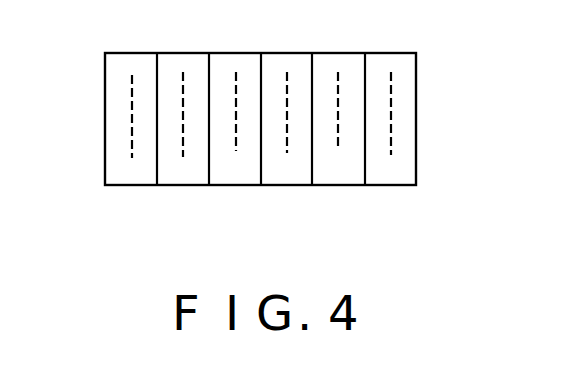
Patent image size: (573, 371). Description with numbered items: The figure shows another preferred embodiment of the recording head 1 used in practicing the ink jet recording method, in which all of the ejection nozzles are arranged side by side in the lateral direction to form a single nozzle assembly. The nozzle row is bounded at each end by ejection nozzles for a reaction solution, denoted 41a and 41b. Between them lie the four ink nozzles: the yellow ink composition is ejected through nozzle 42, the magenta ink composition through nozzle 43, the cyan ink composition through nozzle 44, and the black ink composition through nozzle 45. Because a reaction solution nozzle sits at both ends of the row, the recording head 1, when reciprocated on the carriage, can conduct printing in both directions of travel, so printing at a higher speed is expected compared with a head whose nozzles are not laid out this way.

The recording head 1 is at (416, 133).
The ejection nozzle for reaction solution 41a is at (131, 148).
The ejection nozzle for reaction solution 41b is at (392, 150).
The nozzle for yellow ink composition 42 is at (184, 146).
The nozzle for magenta ink composition 43 is at (237, 150).
The nozzle for cyan ink composition 44 is at (288, 152).
The nozzle for black ink composition 45 is at (340, 150).